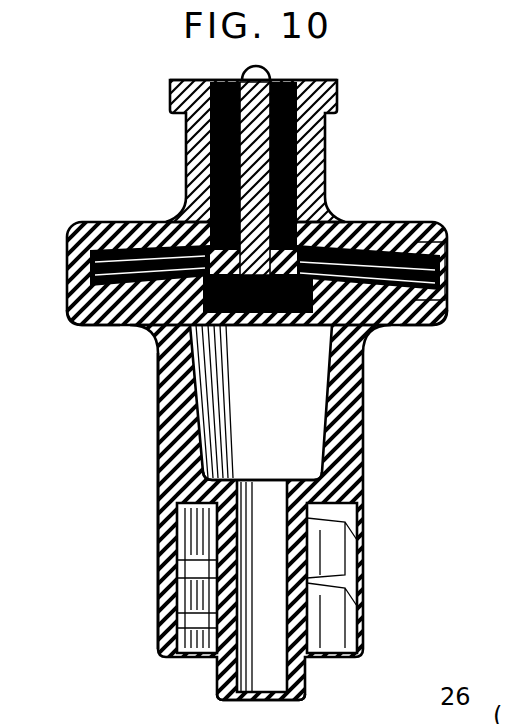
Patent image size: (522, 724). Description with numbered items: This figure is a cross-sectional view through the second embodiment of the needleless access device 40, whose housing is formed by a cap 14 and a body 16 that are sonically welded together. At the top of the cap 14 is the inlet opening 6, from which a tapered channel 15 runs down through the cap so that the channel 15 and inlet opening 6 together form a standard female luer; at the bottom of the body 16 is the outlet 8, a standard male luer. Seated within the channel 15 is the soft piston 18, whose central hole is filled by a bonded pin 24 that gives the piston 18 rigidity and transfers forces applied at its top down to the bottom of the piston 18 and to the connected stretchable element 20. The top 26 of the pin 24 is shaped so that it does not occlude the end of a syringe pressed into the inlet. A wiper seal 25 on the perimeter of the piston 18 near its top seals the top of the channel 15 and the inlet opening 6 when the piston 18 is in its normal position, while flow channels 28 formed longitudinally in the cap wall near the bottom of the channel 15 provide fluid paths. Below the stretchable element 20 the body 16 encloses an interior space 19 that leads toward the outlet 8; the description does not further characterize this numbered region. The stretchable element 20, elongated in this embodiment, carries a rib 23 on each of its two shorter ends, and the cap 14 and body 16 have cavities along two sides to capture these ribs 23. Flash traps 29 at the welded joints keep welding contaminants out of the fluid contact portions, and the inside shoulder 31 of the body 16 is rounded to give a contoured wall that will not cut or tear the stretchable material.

The inlet opening 6 is at (203, 82).
The outlet 8 is at (215, 692).
The cap 14 is at (413, 222).
The channel 15 is at (187, 137).
The body 16 is at (340, 416).
The piston 18 is at (327, 183).
The cavity 19 is at (307, 453).
The stretchable element 20 is at (150, 324).
The rib 23 is at (90, 328).
The pin 24 is at (262, 143).
The wiper seal 25 is at (337, 92).
The top of pin 26 is at (270, 66).
The flow channels 28 is at (172, 225).
The flash traps 29 is at (447, 278).
The inside shoulder 31 is at (443, 313).
The needleless access device 40 is at (157, 466).